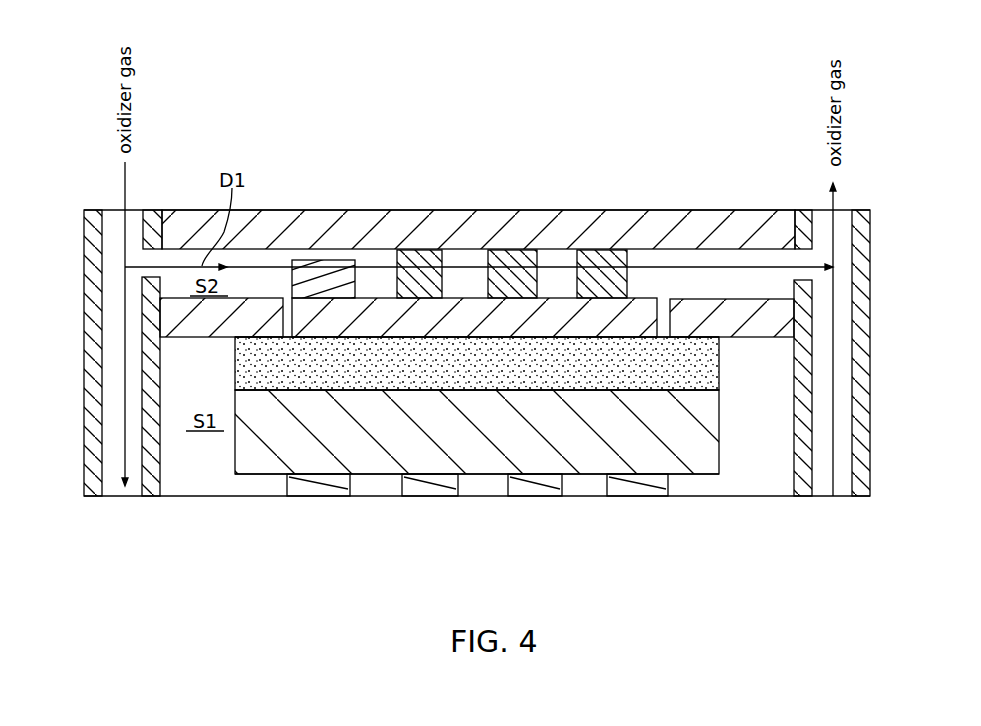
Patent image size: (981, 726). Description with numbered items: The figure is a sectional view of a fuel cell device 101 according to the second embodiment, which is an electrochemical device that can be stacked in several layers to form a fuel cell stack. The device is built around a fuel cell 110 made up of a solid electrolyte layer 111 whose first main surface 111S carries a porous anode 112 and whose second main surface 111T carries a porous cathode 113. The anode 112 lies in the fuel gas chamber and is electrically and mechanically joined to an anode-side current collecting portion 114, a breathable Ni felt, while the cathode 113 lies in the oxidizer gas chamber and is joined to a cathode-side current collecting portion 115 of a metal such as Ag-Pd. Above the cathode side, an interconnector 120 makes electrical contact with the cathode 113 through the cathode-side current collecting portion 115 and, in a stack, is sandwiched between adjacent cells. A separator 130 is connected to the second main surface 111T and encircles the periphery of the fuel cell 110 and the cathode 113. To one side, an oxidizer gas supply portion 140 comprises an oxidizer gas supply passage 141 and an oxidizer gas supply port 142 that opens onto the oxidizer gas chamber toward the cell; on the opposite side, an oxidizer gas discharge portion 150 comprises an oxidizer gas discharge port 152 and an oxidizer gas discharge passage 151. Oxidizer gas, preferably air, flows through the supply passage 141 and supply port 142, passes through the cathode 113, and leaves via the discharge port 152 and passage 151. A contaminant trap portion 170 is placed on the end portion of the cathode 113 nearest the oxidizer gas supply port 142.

The fuel cell device 101 is at (792, 87).
The fuel cell 110 is at (730, 434).
The solid electrolyte layer 111 is at (393, 386).
The second main surface 111T is at (665, 328).
The first main surface 111S is at (601, 396).
The anode 112 is at (492, 458).
The cathode 113 is at (468, 306).
The anode-side current collecting portion 114 is at (632, 488).
The cathode-side current collecting portion 115 is at (510, 260).
The interconnector 120 is at (663, 237).
The separator 130 is at (173, 320).
The oxidizer gas supply portion 140 is at (97, 209).
The oxidizer gas supply passage 141 is at (108, 484).
The oxidizer gas supply port 142 is at (160, 262).
The oxidizer gas discharge portion 150 is at (812, 210).
The oxidizer gas discharge passage 151 is at (818, 489).
The oxidizer gas discharge port 152 is at (793, 258).
The contaminant trap portion 170 is at (324, 262).